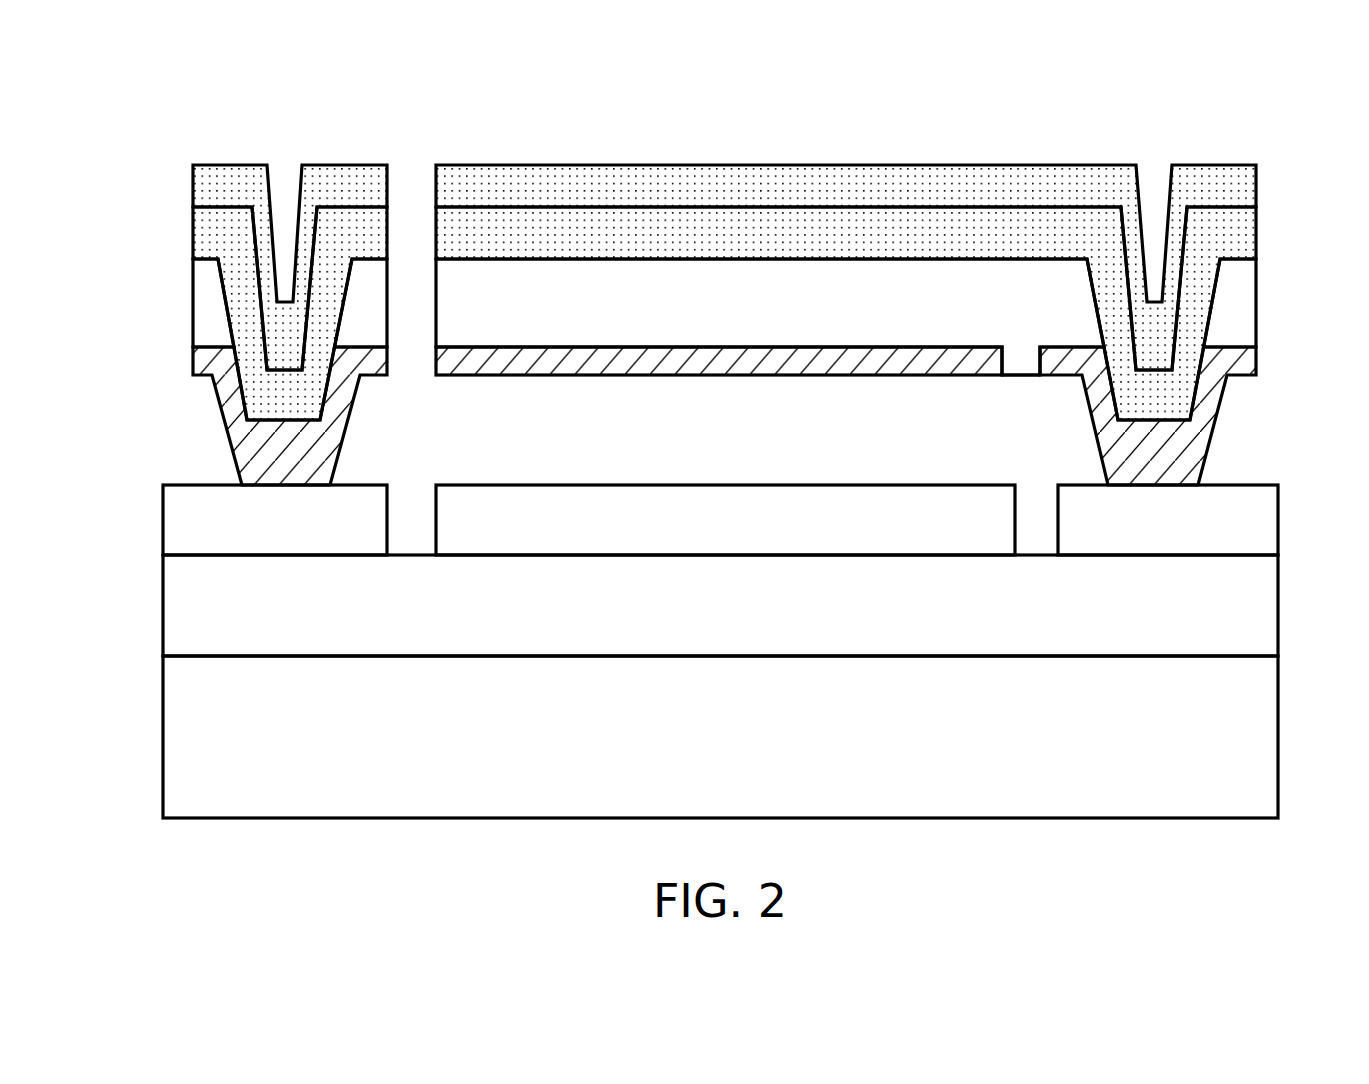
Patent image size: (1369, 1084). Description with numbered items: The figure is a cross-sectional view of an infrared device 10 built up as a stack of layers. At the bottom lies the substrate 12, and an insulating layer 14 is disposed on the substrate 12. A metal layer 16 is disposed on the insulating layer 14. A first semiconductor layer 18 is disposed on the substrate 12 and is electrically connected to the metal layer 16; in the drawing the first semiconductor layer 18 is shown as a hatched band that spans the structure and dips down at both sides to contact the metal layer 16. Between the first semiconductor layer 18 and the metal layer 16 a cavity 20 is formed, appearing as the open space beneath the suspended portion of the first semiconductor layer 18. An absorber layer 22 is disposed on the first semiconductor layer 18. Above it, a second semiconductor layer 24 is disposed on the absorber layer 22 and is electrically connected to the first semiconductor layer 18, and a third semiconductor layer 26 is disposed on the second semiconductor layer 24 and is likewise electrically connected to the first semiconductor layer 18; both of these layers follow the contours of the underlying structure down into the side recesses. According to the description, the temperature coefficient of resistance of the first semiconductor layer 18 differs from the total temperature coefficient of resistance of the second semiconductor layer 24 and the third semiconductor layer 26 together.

The infrared device 10 is at (95, 112).
The substrate 12 is at (1255, 735).
The insulating layer 14 is at (1255, 605).
The metal layer 16 is at (1255, 523).
The first semiconductor layer 18 is at (867, 363).
The cavity 20 is at (778, 443).
The absorber layer 22 is at (640, 302).
The second semiconductor layer 24 is at (779, 235).
The third semiconductor layer 26 is at (1233, 183).